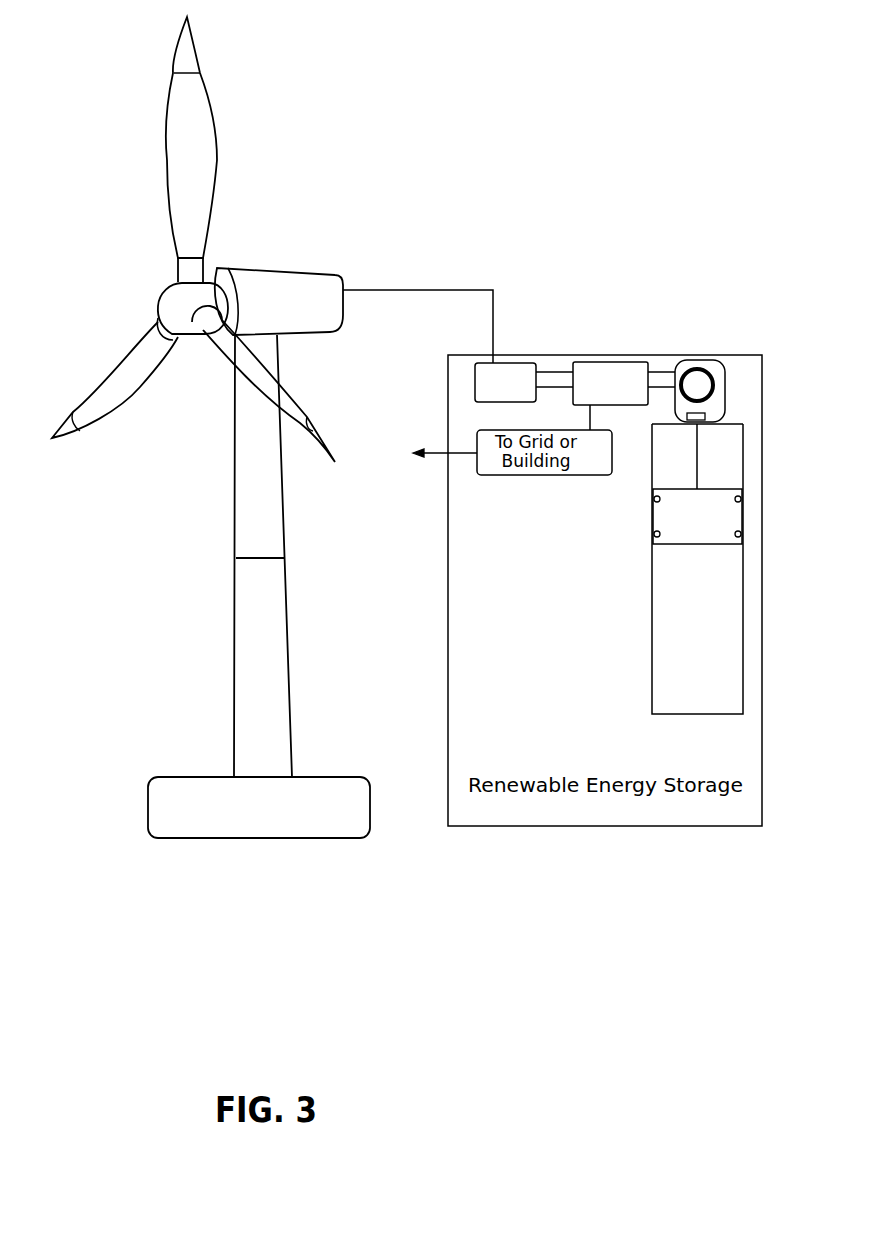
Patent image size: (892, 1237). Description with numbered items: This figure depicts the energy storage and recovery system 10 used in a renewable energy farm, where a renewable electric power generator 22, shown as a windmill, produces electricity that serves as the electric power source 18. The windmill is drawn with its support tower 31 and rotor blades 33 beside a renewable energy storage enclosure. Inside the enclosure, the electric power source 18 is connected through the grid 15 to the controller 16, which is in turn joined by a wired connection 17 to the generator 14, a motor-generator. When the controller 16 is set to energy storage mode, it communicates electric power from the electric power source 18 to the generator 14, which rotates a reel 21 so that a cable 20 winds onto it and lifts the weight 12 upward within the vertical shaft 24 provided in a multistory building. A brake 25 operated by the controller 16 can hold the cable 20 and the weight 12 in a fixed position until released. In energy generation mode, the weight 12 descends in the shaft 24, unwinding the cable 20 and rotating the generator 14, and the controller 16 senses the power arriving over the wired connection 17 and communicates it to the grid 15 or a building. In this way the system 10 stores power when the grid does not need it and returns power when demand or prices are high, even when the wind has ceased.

The energy storage and recovery system 10 is at (593, 187).
The weight 12 is at (683, 512).
The generator 14 is at (741, 404).
The grid 15 is at (553, 371).
The controller 16 is at (617, 365).
The wired connection 17 is at (663, 372).
The electric power source 18 is at (510, 362).
The cable 20 is at (700, 462).
The reel 21 is at (716, 369).
The renewable electric power generator 22 is at (279, 282).
The vertical shaft 24 is at (673, 643).
The brake 25 is at (687, 416).
The tower 31 is at (237, 528).
The rotor blades 33 is at (225, 292).